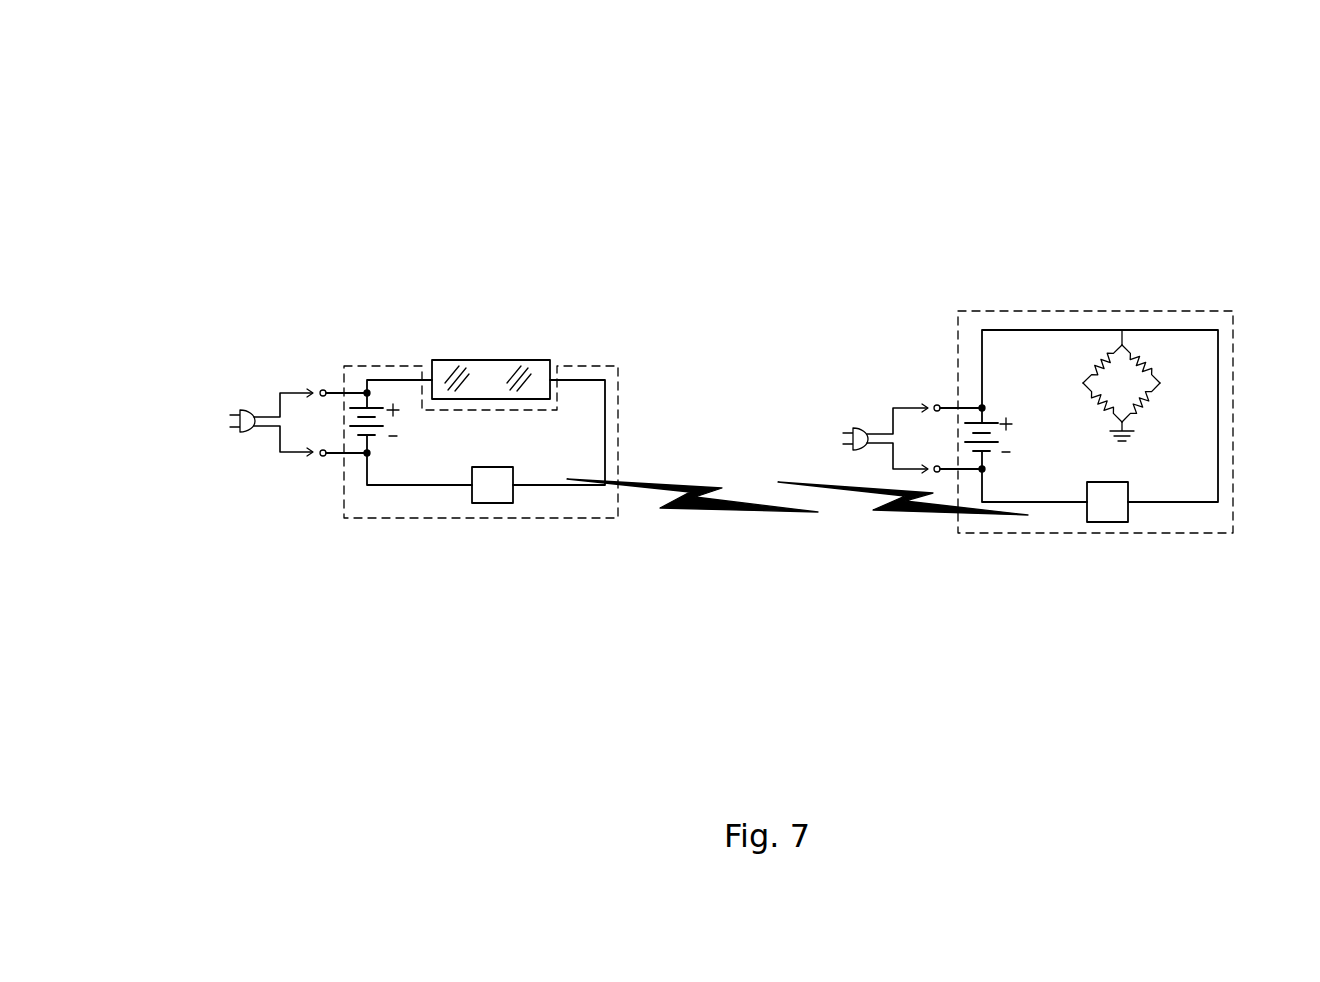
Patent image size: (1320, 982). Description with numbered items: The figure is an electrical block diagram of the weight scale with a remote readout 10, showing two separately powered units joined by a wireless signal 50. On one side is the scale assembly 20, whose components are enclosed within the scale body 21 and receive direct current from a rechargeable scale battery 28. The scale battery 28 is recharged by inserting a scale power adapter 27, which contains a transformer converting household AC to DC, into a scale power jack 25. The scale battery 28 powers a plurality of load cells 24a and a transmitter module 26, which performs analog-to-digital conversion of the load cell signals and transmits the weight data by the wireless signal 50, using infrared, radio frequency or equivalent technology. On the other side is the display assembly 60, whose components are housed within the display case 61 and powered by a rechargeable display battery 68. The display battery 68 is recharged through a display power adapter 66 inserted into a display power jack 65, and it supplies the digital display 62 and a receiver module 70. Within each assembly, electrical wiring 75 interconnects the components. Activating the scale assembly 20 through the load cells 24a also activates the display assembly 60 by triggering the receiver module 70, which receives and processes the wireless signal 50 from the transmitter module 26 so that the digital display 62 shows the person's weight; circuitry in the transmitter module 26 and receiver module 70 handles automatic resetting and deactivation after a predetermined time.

The weight scale with a remote readout 10 is at (290, 135).
The scale assembly 20 is at (1053, 247).
The scale body 21 is at (1012, 311).
The load cells 24a is at (1103, 358).
The scale power jack 25 is at (937, 466).
The transmitter module 26 is at (1113, 500).
The scale power adapter 27 is at (858, 426).
The scale battery 28 is at (993, 450).
The wireless signal 50 is at (885, 509).
The display assembly 60 is at (574, 265).
The display case 61 is at (405, 519).
The digital display 62 is at (501, 368).
The display power jack 65 is at (324, 450).
The display power adapter 66 is at (244, 433).
The display battery 68 is at (357, 430).
The receiver module 70 is at (497, 503).
The electrical wiring 75 is at (583, 378).